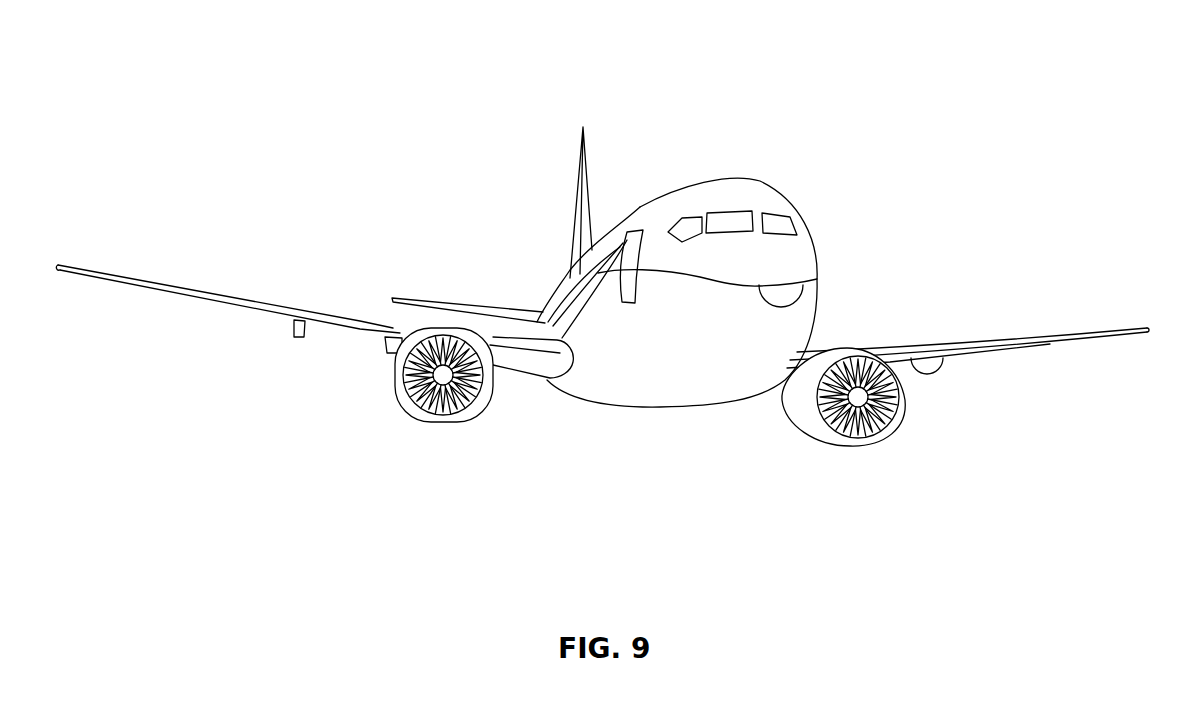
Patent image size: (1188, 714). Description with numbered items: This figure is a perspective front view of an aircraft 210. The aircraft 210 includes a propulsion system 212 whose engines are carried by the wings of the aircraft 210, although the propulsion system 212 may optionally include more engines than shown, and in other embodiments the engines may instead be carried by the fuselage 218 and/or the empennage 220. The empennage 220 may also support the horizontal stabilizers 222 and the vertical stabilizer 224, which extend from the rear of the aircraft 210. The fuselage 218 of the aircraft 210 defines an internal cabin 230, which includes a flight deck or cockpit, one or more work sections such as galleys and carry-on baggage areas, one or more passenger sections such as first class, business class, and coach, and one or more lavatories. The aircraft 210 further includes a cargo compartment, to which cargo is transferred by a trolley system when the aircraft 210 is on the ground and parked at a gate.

The aircraft 210 is at (333, 72).
The propulsion system 212 is at (320, 428).
The fuselage 218 is at (815, 247).
The empennage 220 is at (568, 278).
The horizontal stabilizers 222 is at (440, 293).
The vertical stabilizer 224 is at (580, 168).
The internal cabin 230 is at (735, 217).